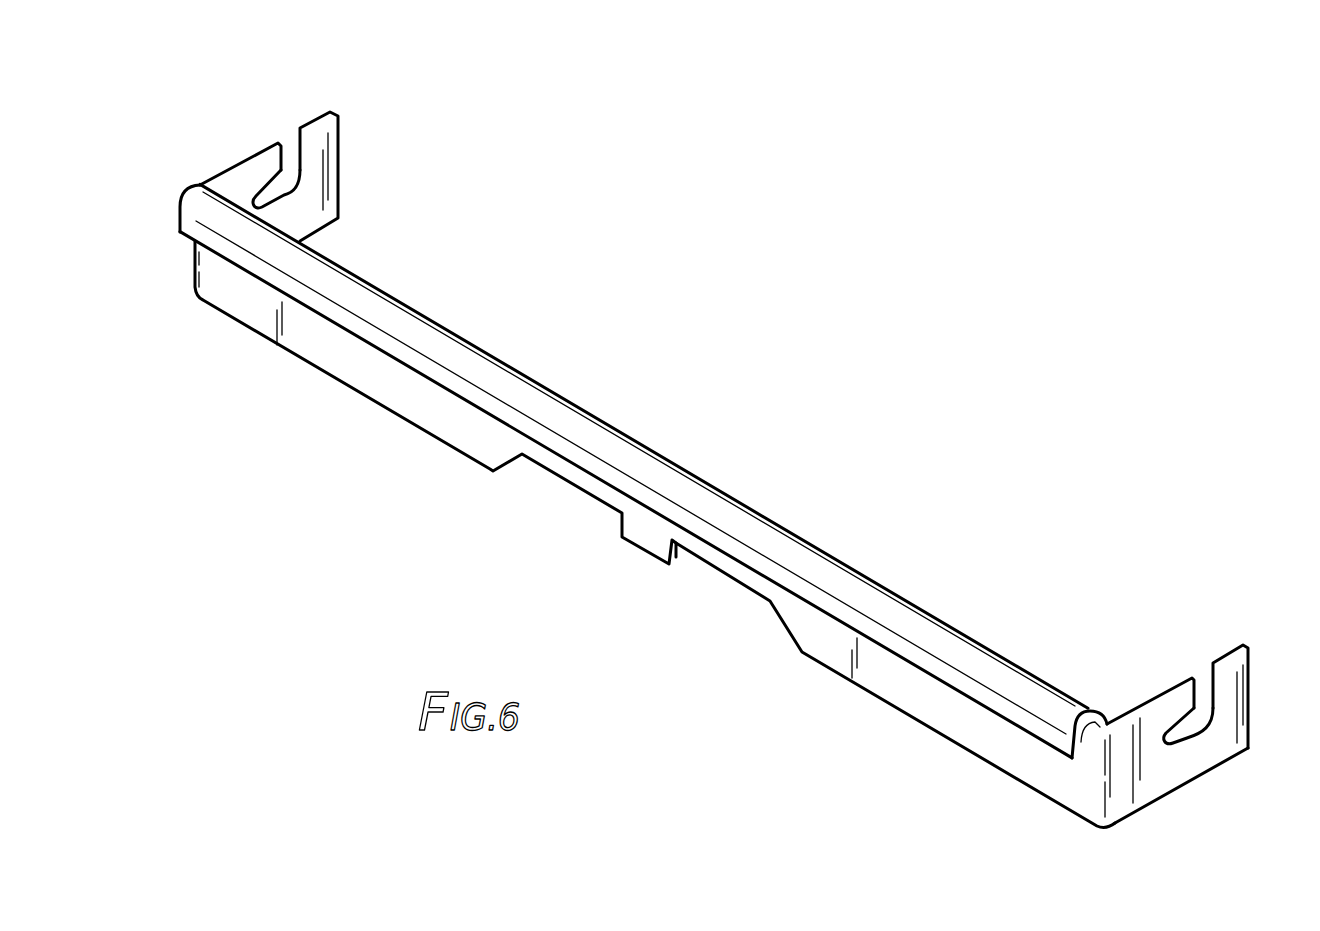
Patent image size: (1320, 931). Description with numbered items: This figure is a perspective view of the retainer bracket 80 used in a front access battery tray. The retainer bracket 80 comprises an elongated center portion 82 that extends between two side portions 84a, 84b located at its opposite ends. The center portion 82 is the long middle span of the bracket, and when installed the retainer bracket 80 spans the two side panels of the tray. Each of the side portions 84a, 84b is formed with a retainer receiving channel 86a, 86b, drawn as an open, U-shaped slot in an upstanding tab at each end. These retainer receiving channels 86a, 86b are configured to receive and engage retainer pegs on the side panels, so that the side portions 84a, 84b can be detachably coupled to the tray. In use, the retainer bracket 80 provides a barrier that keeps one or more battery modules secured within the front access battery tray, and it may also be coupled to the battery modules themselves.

The retainer bracket 80 is at (858, 287).
The center portion 82 is at (652, 448).
The side portion 84a is at (1258, 662).
The side portion 84b is at (224, 171).
The retainer receiving channel 86a is at (1202, 673).
The retainer receiving channel 86b is at (288, 137).